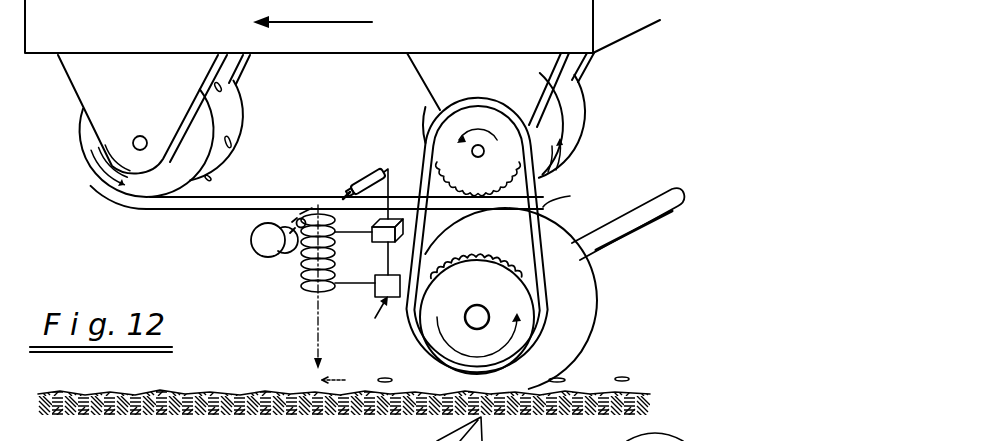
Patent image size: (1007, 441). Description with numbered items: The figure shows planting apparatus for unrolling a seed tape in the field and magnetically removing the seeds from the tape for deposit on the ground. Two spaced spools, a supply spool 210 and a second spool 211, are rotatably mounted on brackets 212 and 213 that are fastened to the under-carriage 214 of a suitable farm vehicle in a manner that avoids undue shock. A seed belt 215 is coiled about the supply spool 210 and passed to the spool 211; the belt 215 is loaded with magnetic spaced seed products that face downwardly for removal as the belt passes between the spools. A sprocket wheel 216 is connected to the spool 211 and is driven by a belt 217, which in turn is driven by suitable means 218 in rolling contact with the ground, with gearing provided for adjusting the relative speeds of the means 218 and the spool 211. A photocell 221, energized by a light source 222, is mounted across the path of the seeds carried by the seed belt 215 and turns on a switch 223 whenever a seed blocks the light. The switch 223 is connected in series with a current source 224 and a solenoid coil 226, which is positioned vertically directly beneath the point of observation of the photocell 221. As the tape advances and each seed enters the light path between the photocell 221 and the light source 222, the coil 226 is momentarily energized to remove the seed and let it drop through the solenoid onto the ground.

The supply spool 210 is at (228, 113).
The spool 211 is at (578, 116).
The bracket 212 is at (154, 93).
The bracket 213 is at (498, 89).
The under-carriage 214 is at (321, 48).
The seed belt 215 is at (283, 199).
The sprocket wheel 216 is at (491, 180).
The belt 217 is at (571, 196).
The means in rolling contact with the ground 218 is at (596, 305).
The photocell 221 is at (370, 177).
The light source 222 is at (260, 246).
The switch 223 is at (369, 247).
The current source 224 is at (373, 292).
The solenoid coil 226 is at (303, 287).